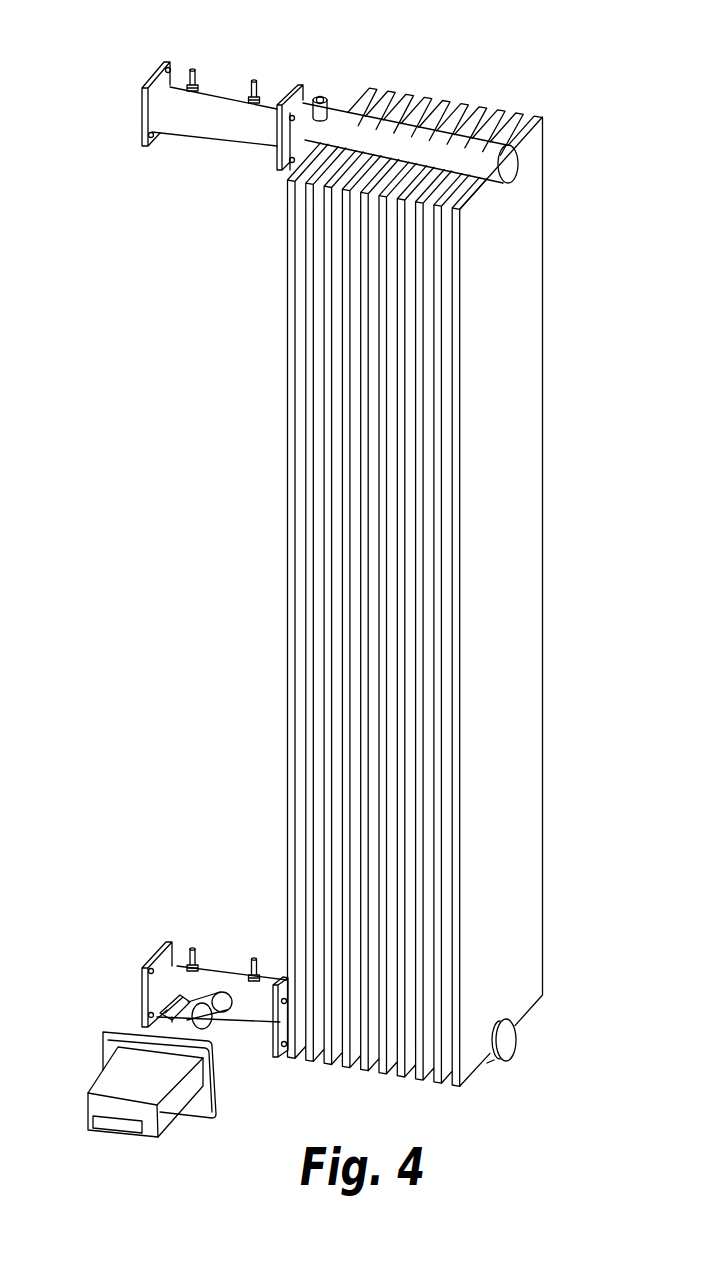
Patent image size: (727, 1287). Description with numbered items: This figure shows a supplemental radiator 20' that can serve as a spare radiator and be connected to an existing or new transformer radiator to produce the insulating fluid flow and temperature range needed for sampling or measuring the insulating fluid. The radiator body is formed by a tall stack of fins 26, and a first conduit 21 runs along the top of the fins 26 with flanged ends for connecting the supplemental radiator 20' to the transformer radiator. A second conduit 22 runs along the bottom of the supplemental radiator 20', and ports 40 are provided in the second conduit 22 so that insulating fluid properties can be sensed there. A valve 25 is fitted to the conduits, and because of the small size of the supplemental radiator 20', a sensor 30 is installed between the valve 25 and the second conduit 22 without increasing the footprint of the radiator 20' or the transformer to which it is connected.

The supplemental radiator 20' is at (463, 587).
The first conduit 21 is at (213, 128).
The second conduit 22 is at (173, 980).
The valve 25 is at (315, 97).
The fins 26 is at (392, 434).
The sensor 30 is at (127, 1078).
The ports 40 is at (247, 97).